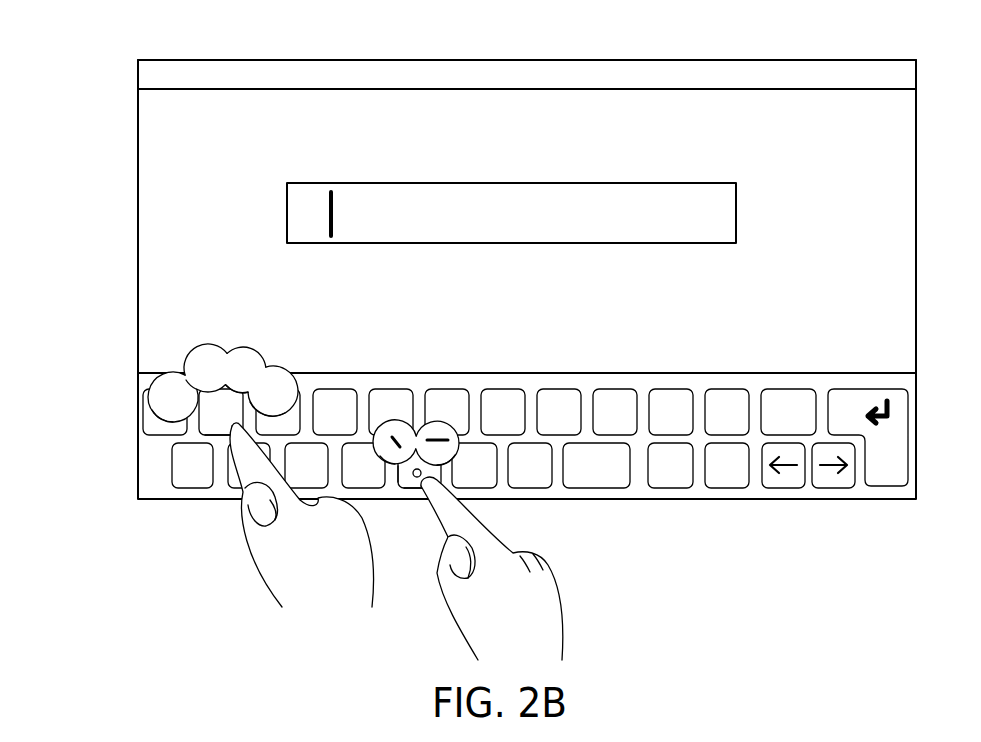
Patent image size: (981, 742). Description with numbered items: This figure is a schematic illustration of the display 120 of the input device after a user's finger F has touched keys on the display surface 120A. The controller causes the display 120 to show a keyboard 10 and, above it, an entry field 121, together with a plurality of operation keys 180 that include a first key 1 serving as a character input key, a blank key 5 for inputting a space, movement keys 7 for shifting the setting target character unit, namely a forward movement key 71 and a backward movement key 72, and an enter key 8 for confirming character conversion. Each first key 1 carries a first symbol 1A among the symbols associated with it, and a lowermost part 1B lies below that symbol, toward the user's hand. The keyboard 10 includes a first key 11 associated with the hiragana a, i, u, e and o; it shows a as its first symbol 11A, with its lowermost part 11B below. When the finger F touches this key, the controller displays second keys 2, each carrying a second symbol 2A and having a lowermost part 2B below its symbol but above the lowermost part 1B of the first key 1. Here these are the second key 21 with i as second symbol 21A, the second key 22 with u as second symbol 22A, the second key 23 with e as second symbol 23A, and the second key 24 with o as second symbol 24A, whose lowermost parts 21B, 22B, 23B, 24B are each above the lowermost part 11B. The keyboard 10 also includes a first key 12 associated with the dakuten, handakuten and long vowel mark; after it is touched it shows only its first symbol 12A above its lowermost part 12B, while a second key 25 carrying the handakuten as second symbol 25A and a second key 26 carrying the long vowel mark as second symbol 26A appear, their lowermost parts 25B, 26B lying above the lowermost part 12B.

The operation keys 180 is at (658, 577).
The display 120 is at (527, 121).
The display surface 120A is at (335, 115).
The entry field 121 is at (287, 197).
The keyboard 10 is at (493, 428).
The first key 1 is at (156, 394).
The first key 11 is at (156, 394).
The first symbol 1A is at (199, 333).
The first symbol 11A is at (220, 398).
The lowermost part 1B is at (178, 492).
The lowermost part 11B is at (217, 440).
The second keys 2 is at (301, 431).
The second key 21 is at (301, 431).
The second key 22 is at (184, 357).
The second key 23 is at (266, 346).
The second key 24 is at (293, 369).
The second key 25 is at (410, 421).
The second key 26 is at (466, 426).
The second symbol 2A is at (257, 353).
The second symbol 21A is at (163, 390).
The second symbol 22A is at (206, 368).
The second symbol 23A is at (243, 358).
The second symbol 24A is at (287, 372).
The second symbol 25A is at (411, 425).
The second symbol 26A is at (432, 433).
The lowermost part 2B is at (301, 491).
The lowermost part 21B is at (165, 423).
The lowermost part 22B is at (205, 396).
The lowermost part 23B is at (238, 395).
The lowermost part 24B is at (264, 420).
The lowermost part 25B is at (389, 472).
The lowermost part 26B is at (446, 463).
The first key 12 is at (433, 530).
The first symbol 12A is at (393, 471).
The lowermost part 12B is at (421, 489).
The finger F is at (238, 434).
The blank key 5 is at (607, 489).
The movement keys 7 is at (808, 528).
The forward movement key 71 is at (773, 489).
The backward movement key 72 is at (842, 489).
The enter key 8 is at (883, 489).